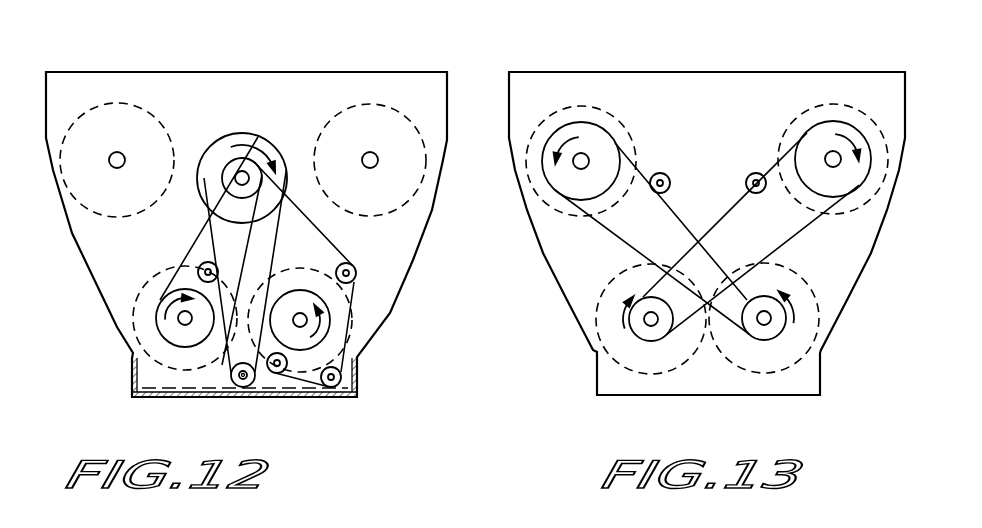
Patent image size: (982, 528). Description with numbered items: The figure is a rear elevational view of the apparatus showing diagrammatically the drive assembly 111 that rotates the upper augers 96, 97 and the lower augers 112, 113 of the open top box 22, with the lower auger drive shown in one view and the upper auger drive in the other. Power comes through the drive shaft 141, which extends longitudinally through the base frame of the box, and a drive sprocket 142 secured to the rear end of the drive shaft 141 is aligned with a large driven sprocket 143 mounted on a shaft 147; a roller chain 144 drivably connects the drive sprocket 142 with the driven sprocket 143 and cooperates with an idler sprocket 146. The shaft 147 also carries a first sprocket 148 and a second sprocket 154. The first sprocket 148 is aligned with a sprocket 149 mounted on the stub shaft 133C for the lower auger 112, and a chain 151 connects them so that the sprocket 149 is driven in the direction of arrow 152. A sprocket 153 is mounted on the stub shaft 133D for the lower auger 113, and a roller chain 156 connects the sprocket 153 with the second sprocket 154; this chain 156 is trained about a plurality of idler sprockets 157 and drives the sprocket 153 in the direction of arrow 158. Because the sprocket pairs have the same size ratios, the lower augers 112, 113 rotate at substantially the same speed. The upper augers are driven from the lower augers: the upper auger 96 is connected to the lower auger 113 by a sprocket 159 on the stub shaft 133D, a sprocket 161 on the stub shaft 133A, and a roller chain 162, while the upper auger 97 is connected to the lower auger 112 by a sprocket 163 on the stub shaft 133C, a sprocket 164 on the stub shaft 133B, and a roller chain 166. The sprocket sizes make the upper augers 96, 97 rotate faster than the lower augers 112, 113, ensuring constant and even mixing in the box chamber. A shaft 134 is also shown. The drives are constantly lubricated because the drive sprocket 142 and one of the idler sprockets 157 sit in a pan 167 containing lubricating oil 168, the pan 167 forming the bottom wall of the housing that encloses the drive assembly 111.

In FIG. 12, the box 22 is at (362, 70).
In FIG. 13, the box 22 is at (836, 70).
In FIG. 12, the upper auger 96 is at (137, 105).
In FIG. 13, the upper auger 96 is at (633, 128).
In FIG. 12, the upper auger 97 is at (388, 103).
In FIG. 13, the upper auger 97 is at (808, 102).
In FIG. 12, the drive assembly 111 is at (271, 105).
In FIG. 13, the drive assembly 111 is at (680, 103).
In FIG. 12, the lower auger 112 is at (136, 297).
In FIG. 13, the lower auger 112 is at (598, 298).
In FIG. 12, the lower auger 113 is at (355, 318).
In FIG. 13, the lower auger 113 is at (815, 293).
In FIG. 12, the stub shaft 133A is at (115, 156).
In FIG. 12, the stub shaft 133B is at (378, 160).
In FIG. 13, the stub shaft 133B is at (829, 157).
In FIG. 12, the stub shaft 133C is at (178, 318).
In FIG. 13, the stub shaft 133C is at (647, 322).
In FIG. 12, the stub shaft 133D is at (305, 321).
In FIG. 13, the stub shaft 133D is at (769, 322).
In FIG. 13, the upper left pulley shaft 134 is at (577, 164).
In FIG. 12, the drive shaft 141 is at (238, 380).
In FIG. 12, the drive sprocket 142 is at (245, 388).
In FIG. 12, the driven sprocket 143 is at (240, 140).
In FIG. 12, the roller chain 144 is at (224, 262).
In FIG. 12, the idler sprocket 146 is at (203, 267).
In FIG. 12, the shaft 147 is at (240, 176).
In FIG. 12, the first sprocket 148 is at (323, 302).
In FIG. 12, the sprocket 149 is at (170, 334).
In FIG. 12, the chain 151 is at (197, 225).
In FIG. 12, the arrow 152 is at (168, 298).
In FIG. 12, the sprocket 153 is at (313, 305).
In FIG. 12, the second sprocket 154 is at (216, 264).
In FIG. 12, the roller chain 156 is at (318, 226).
In FIG. 12, the idler sprockets 157 is at (356, 273).
In FIG. 12, the arrow 158 is at (313, 333).
In FIG. 13, the sprocket 159 is at (765, 338).
In FIG. 13, the sprocket 161 is at (592, 138).
In FIG. 13, the roller chain 162 is at (782, 266).
In FIG. 13, the sprocket 163 is at (658, 333).
In FIG. 13, the sprocket 164 is at (845, 180).
In FIG. 13, the roller chain 166 is at (800, 226).
In FIG. 12, the pan 167 is at (343, 398).
In FIG. 12, the lubricating oil 168 is at (315, 393).